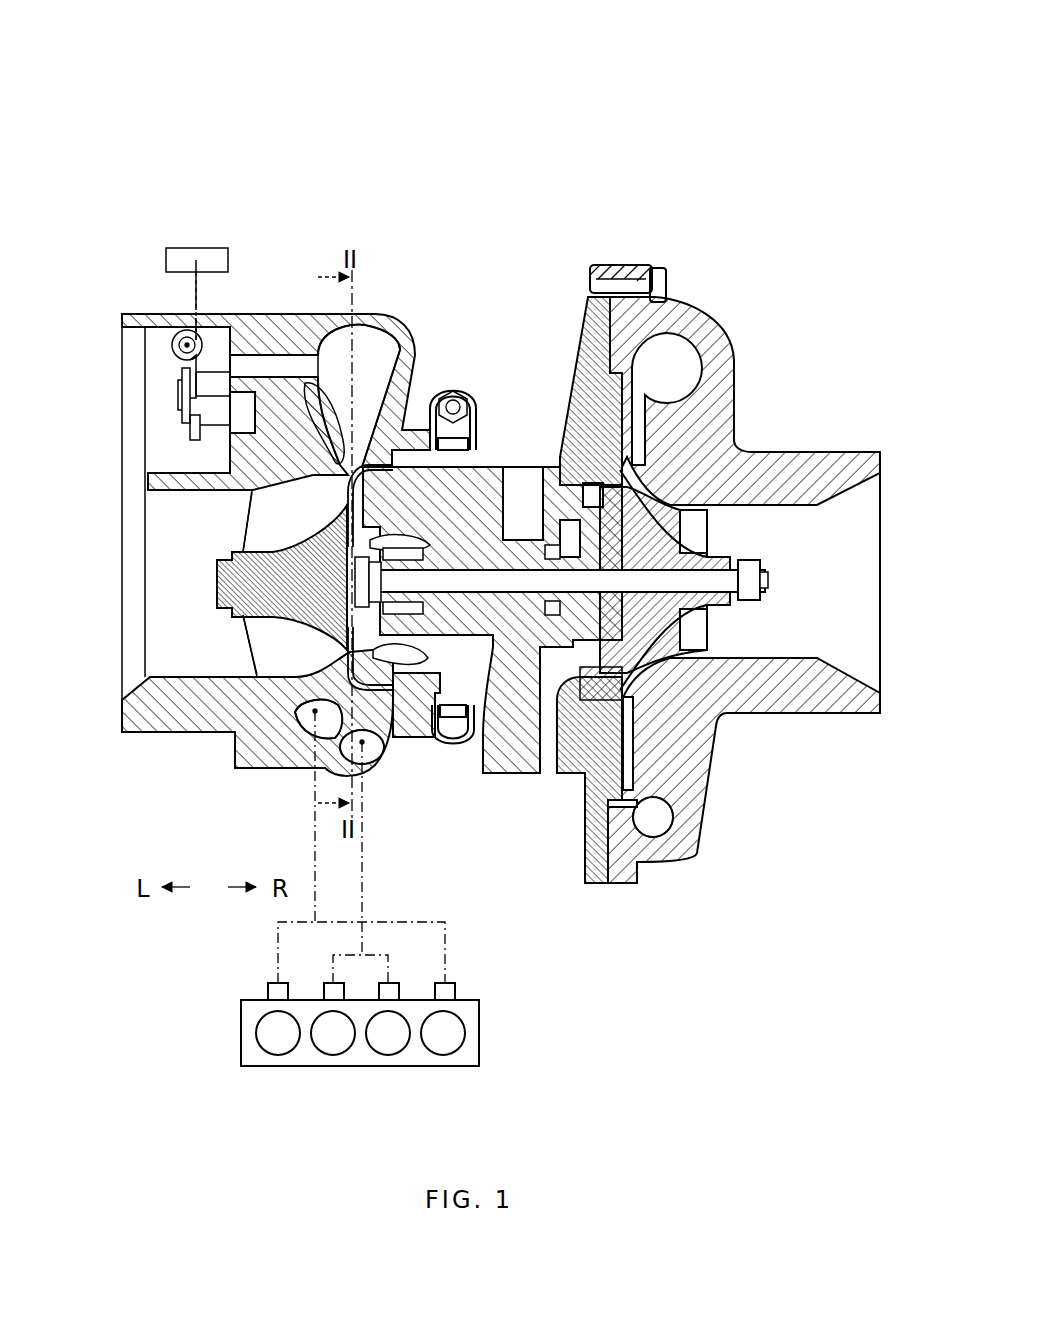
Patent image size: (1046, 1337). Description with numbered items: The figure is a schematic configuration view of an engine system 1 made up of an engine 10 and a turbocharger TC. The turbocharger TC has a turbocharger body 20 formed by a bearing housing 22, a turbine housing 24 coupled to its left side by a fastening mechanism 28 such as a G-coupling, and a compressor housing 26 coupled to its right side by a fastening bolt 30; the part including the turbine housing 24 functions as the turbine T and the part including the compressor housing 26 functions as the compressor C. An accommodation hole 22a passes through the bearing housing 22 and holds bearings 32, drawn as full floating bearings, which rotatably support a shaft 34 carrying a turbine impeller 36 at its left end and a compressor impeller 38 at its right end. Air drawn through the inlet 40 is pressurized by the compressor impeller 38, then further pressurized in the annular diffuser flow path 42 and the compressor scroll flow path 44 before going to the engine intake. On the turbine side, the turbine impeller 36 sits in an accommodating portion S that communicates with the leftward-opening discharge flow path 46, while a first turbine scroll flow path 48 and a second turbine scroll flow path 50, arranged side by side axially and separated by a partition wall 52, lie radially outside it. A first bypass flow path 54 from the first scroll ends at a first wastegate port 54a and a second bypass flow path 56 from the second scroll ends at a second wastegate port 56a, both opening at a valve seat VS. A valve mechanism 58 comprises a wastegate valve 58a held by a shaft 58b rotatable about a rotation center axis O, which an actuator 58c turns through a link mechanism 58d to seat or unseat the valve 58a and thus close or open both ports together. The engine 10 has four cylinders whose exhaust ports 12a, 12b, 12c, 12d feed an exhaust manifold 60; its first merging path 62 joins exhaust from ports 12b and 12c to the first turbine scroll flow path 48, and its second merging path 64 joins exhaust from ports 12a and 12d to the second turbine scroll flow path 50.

The engine system 1 is at (285, 68).
The engine 10 is at (388, 1041).
The exhaust port 12a is at (455, 996).
The exhaust port 12b is at (399, 996).
The exhaust port 12c is at (344, 996).
The exhaust port 12d is at (288, 996).
The turbocharger body 20 is at (437, 207).
The bearing housing 22 is at (588, 310).
The accommodation hole 22a is at (455, 605).
The turbine housing 24 is at (172, 737).
The compressor housing 26 is at (735, 400).
The fastening mechanism 28 is at (462, 388).
The fastening bolt 30 is at (655, 263).
The bearings 32 is at (524, 560).
The shaft 34 is at (473, 600).
The turbine impeller 36 is at (240, 540).
The compressor impeller 38 is at (715, 535).
The inlet 40 is at (881, 550).
The diffuser flow path 42 is at (630, 776).
The compressor scroll flow path 44 is at (665, 818).
The discharge flow path 46 is at (200, 664).
The first turbine scroll flow path 48 is at (305, 722).
The second turbine scroll flow path 50 is at (368, 752).
The partition wall 52 is at (322, 350).
The first bypass flow path 54 is at (258, 392).
The first wastegate port 54a is at (188, 425).
The second bypass flow path 56 is at (258, 390).
The second wastegate port 56a is at (190, 380).
The valve mechanism 58 is at (151, 314).
The wastegate valve 58a is at (178, 400).
The shaft 58b is at (172, 345).
The actuator 58c is at (198, 248).
The link mechanism 58d is at (196, 320).
The exhaust manifold 60 is at (448, 889).
The first merging path 62 is at (318, 915).
The second merging path 64 is at (365, 915).
The turbine T is at (98, 250).
The turbocharger TC is at (366, 151).
The compressor C is at (776, 251).
The accommodating portion S is at (282, 540).
The rotation center axis O is at (178, 330).
The valve seat VS is at (218, 448).